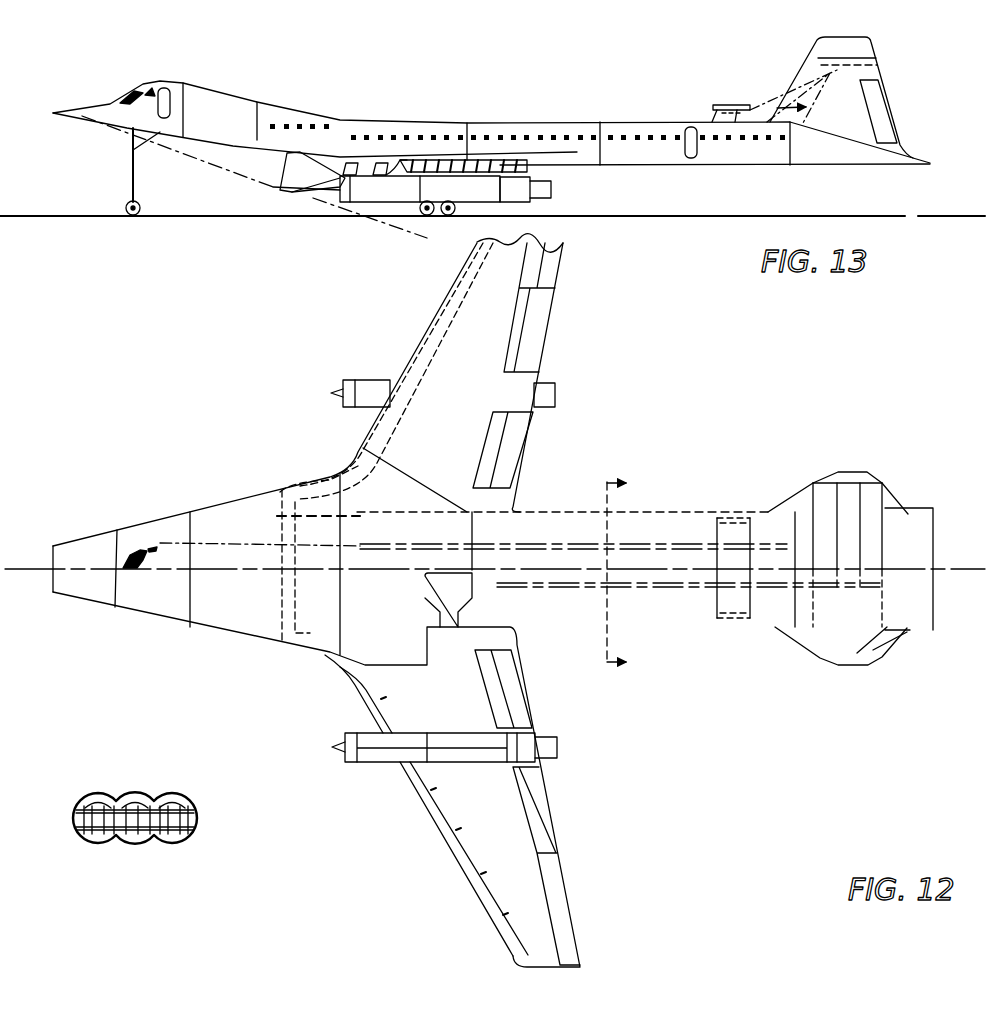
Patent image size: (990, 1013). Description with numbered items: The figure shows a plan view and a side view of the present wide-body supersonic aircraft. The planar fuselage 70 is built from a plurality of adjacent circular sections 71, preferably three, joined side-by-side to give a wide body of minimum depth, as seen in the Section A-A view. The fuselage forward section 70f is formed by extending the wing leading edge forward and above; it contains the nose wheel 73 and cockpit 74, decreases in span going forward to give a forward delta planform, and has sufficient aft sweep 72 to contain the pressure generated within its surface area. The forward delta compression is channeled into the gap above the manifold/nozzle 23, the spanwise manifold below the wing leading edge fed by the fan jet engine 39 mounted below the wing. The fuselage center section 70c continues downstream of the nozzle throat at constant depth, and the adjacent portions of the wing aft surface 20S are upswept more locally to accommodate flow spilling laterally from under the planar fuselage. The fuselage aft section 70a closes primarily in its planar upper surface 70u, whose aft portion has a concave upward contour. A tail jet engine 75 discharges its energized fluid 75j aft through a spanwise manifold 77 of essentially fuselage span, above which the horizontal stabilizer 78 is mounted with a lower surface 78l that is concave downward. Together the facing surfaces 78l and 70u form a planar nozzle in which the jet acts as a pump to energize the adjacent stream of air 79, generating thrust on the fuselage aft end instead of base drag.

In FIG. 13, the fuselage 70 is at (550, 121).
In FIG. 12, the fuselage 70 is at (548, 512).
In FIG. 13, the fuselage center section 70c is at (425, 121).
In FIG. 13, the fuselage forward section 70f is at (228, 143).
In FIG. 12, the fuselage forward section 70f is at (133, 615).
In FIG. 13, the fuselage aft section 70a is at (851, 165).
In FIG. 13, the fuselage upper surface 70u is at (898, 135).
In FIG. 13, the cockpit 74 is at (163, 82).
In FIG. 13, the nose wheel 73 is at (147, 212).
In FIG. 13, the jet engine 75 is at (713, 104).
In FIG. 13, the energized fluid 75j is at (815, 110).
In FIG. 13, the horizontal stabilizer 78 is at (823, 66).
In FIG. 13, the lower surface of horizontal stabilizer 78l is at (870, 69).
In FIG. 13, the adjacent stream of air 79 is at (812, 93).
In FIG. 12, the fan jet engine 39 is at (358, 378).
In FIG. 12, the wing aft surface 20S is at (468, 446).
In FIG. 12, the spanwise manifold 77 is at (752, 528).
In FIG. 12, the aft sweep 72 is at (251, 646).
In FIG. 12, the manifold/nozzle 23 is at (433, 801).
In FIG. 12, the circular sections 71 is at (178, 798).